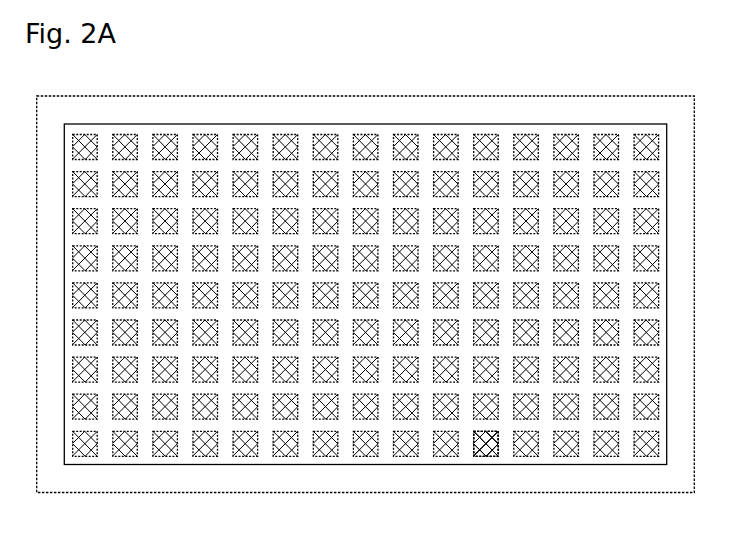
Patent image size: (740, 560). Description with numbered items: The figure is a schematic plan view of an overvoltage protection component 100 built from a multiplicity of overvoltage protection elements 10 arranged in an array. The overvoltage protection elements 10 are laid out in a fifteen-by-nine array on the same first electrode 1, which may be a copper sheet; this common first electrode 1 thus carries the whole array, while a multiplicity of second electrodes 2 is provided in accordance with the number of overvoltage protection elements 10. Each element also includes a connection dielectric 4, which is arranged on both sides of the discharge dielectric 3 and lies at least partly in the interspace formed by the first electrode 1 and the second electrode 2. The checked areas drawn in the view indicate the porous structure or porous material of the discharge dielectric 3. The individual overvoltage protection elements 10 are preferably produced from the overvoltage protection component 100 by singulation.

The overvoltage protection component 100 is at (366, 287).
The first electrode 1 is at (293, 478).
The connection dielectric 4 is at (387, 455).
The overvoltage protection element 10 is at (280, 143).
The discharge dielectric 3 is at (487, 443).
The second electrode 2 is at (486, 443).